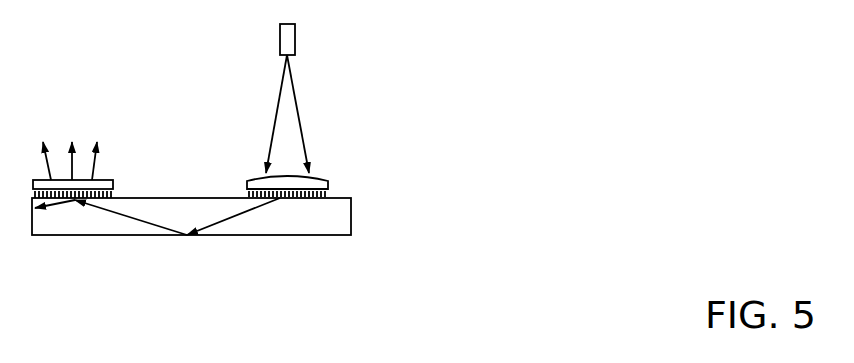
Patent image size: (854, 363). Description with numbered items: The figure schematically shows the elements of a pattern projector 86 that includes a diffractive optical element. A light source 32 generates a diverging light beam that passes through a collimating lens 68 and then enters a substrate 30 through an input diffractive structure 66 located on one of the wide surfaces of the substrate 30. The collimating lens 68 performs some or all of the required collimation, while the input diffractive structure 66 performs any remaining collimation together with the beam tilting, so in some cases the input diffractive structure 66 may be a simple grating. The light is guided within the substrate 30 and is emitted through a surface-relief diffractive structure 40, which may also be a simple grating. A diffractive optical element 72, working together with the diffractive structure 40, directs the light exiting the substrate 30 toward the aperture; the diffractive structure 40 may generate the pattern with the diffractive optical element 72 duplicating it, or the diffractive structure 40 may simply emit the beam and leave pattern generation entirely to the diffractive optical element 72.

The substrate 30 is at (182, 198).
The light source 32 is at (295, 38).
The surface-relief diffractive structure 40 is at (107, 198).
The input diffractive structure 66 is at (300, 198).
The collimating lens 68 is at (328, 184).
The diffractive optical element 72 is at (108, 180).
The pattern projector 86 is at (532, 80).